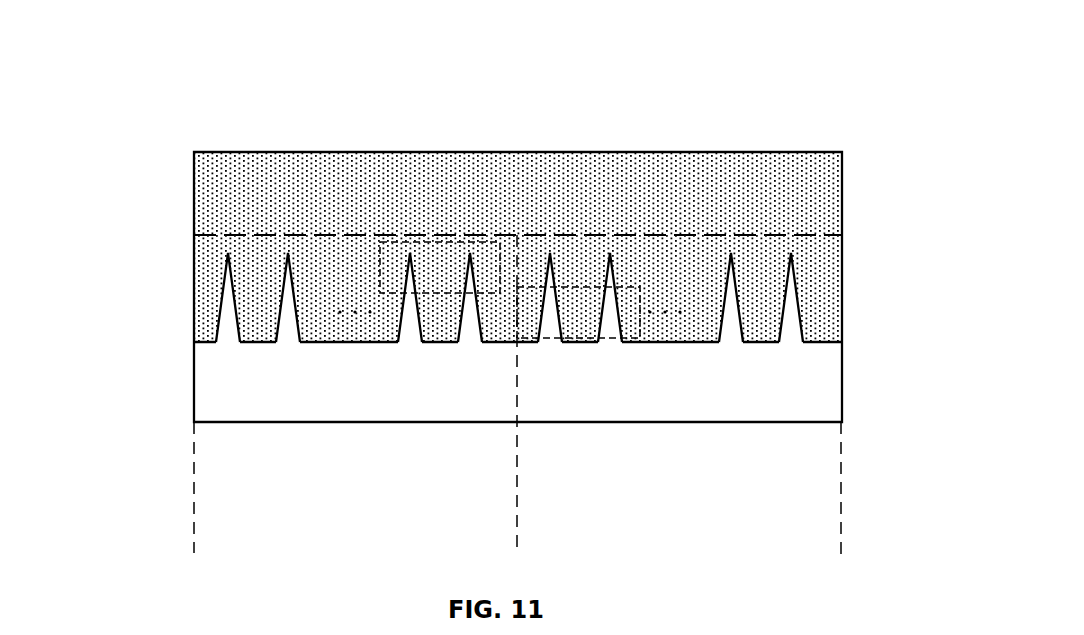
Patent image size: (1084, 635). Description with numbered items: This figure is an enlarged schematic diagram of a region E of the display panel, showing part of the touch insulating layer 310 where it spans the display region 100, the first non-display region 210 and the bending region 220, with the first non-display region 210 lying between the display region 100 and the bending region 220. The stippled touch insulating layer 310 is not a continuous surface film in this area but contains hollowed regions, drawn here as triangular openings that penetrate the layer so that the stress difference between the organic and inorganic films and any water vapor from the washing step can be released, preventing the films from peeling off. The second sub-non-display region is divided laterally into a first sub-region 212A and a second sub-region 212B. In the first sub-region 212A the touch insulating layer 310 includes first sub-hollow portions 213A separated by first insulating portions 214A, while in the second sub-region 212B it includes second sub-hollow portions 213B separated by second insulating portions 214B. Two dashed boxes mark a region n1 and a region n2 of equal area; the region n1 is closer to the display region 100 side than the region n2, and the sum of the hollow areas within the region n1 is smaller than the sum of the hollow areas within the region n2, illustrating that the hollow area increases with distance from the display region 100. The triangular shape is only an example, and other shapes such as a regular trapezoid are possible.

The region E is at (109, 31).
The display region 100 is at (194, 152).
The first non-display region 210 is at (194, 235).
The bending region 220 is at (194, 422).
The first sub-hollow portion 213A is at (468, 303).
The second sub-hollow portion 213B is at (727, 313).
The first insulating portion 214A is at (438, 313).
The second insulating portion 214B is at (755, 325).
The first sub-region 212A is at (505, 498).
The second sub-region 212B is at (529, 498).
The touch insulating layer 310 is at (822, 263).
The region n1 is at (391, 298).
The region n2 is at (545, 341).